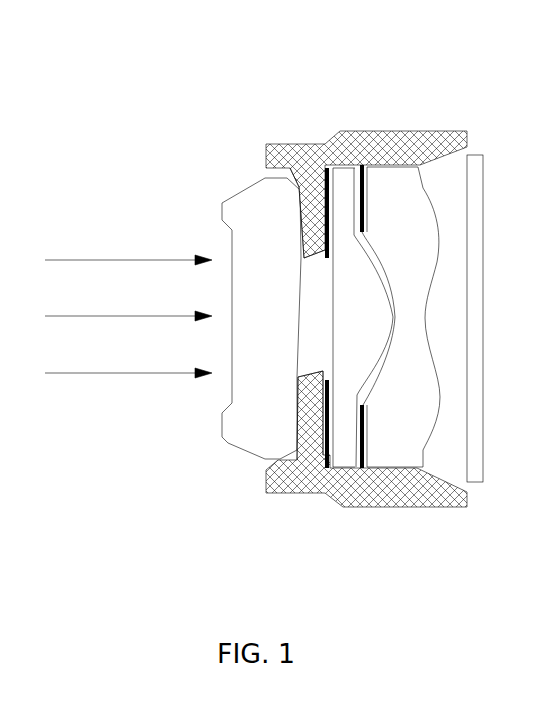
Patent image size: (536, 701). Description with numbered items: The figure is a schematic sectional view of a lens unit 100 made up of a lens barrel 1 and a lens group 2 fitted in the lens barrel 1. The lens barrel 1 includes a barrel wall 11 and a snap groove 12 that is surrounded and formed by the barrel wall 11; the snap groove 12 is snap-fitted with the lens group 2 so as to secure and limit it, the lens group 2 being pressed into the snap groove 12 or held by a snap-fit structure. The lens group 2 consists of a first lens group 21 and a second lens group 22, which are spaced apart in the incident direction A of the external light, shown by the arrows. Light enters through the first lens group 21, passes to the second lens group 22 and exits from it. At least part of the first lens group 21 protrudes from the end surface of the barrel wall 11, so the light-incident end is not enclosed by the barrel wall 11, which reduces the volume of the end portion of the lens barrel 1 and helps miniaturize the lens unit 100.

The lens unit 100 is at (333, 310).
The lens barrel 1 is at (325, 292).
The barrel wall 11 is at (312, 155).
The snap groove 12 is at (283, 237).
The lens group 2 is at (311, 367).
The first lens group 21 is at (241, 470).
The second lens group 22 is at (351, 486).
The incident direction A is at (128, 332).